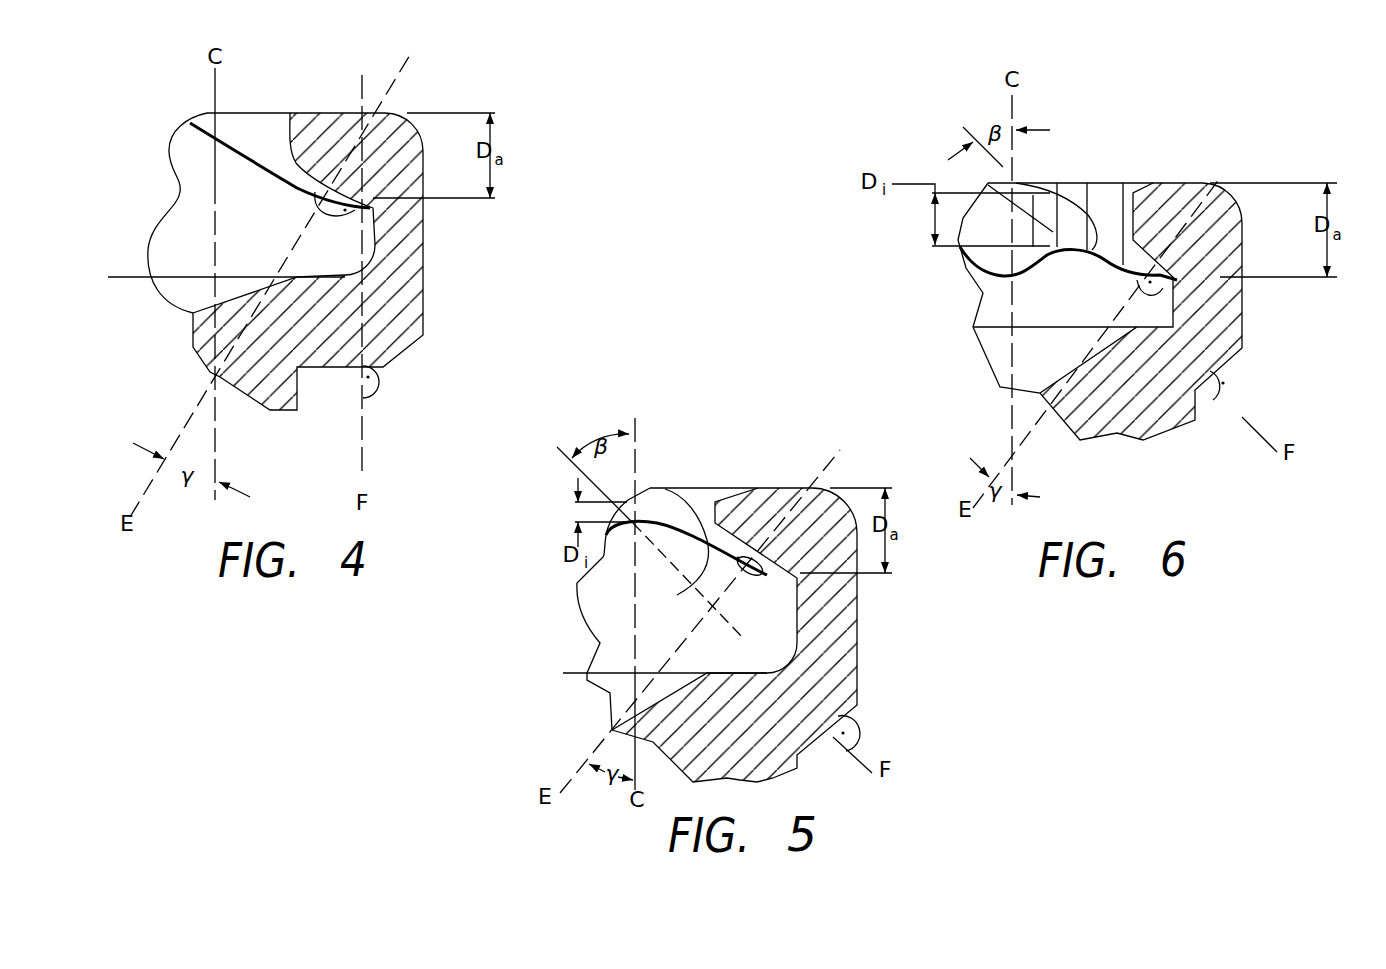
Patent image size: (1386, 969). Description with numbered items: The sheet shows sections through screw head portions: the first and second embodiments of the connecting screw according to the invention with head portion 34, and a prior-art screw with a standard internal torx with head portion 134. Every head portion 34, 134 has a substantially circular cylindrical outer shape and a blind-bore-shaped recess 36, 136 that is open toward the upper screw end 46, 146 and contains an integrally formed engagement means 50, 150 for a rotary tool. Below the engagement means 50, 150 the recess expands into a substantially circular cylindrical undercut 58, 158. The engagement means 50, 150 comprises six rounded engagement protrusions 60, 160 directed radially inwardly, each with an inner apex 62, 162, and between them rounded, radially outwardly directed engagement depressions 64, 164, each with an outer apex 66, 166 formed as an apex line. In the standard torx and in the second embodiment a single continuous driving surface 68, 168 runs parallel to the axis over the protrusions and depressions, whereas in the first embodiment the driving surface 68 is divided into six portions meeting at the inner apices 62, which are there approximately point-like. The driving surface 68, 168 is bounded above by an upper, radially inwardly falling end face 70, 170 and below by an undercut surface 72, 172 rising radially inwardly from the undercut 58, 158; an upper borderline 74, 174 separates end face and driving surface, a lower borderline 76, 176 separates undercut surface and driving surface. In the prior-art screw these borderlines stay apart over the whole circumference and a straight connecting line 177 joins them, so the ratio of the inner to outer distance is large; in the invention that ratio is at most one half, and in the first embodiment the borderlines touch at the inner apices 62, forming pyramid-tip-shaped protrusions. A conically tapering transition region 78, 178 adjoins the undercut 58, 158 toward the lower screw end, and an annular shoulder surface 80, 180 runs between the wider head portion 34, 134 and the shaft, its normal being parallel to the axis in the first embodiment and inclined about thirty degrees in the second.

In FIG. 4, the head portion 34 is at (416, 352).
In FIG. 5, the head portion 34 is at (815, 793).
In FIG. 4, the blind-bore-shaped recess 36 is at (173, 258).
In FIG. 5, the blind-bore-shaped recess 36 is at (645, 650).
In FIG. 4, the upper screw end 46 is at (387, 112).
In FIG. 5, the upper screw end 46 is at (787, 487).
In FIG. 4, the engagement means 50 is at (122, 187).
In FIG. 5, the engagement means 50 is at (552, 563).
In FIG. 4, the undercut 58 is at (355, 275).
In FIG. 5, the undercut 58 is at (770, 673).
In FIG. 4, the engagement protrusion 60 is at (290, 123).
In FIG. 5, the engagement protrusion 60 is at (757, 487).
In FIG. 4, the inner apex 62 is at (212, 141).
In FIG. 5, the inner apex 62 is at (630, 500).
In FIG. 4, the engagement depression 64 is at (348, 248).
In FIG. 5, the engagement depression 64 is at (788, 637).
In FIG. 4, the outer apex 66 is at (270, 177).
In FIG. 5, the outer apex 66 is at (797, 578).
In FIG. 4, the driving surface 68 is at (270, 133).
In FIG. 5, the driving surface 68 is at (700, 500).
In FIG. 4, the end face 70 is at (227, 127).
In FIG. 5, the end face 70 is at (653, 488).
In FIG. 4, the undercut surface 72 is at (335, 113).
In FIG. 5, the undercut surface 72 is at (622, 554).
In FIG. 4, the upper borderline 74 is at (251, 126).
In FIG. 5, the upper borderline 74 is at (690, 586).
In FIG. 4, the lower borderline 76 is at (295, 183).
In FIG. 5, the lower borderline 76 is at (742, 573).
In FIG. 4, the transition region 78 is at (200, 284).
In FIG. 5, the transition region 78 is at (613, 688).
In FIG. 4, the annular shoulder surface 80 is at (378, 384).
In FIG. 5, the annular shoulder surface 80 is at (852, 717).
In FIG. 6, the head portion 134 is at (1168, 447).
In FIG. 6, the blind-bore-shaped recess 136 is at (1030, 312).
In FIG. 6, the upper screw end 146 is at (1218, 184).
In FIG. 6, the engagement means 150 is at (945, 252).
In FIG. 6, the undercut 158 is at (1162, 295).
In FIG. 6, the engagement protrusion 160 is at (1193, 183).
In FIG. 6, the inner apex 162 is at (1093, 193).
In FIG. 6, the engagement depression 164 is at (992, 213).
In FIG. 6, the outer apex 166 is at (1017, 183).
In FIG. 6, the driving surface 168 is at (1094, 197).
In FIG. 6, the end face 170 is at (1077, 187).
In FIG. 6, the undercut surface 172 is at (975, 256).
In FIG. 6, the upper borderline 174 is at (1093, 258).
In FIG. 6, the lower borderline 176 is at (1107, 268).
In FIG. 6, the connecting line 177 is at (1140, 244).
In FIG. 6, the transition region 178 is at (1033, 358).
In FIG. 6, the annular shoulder surface 180 is at (1237, 357).